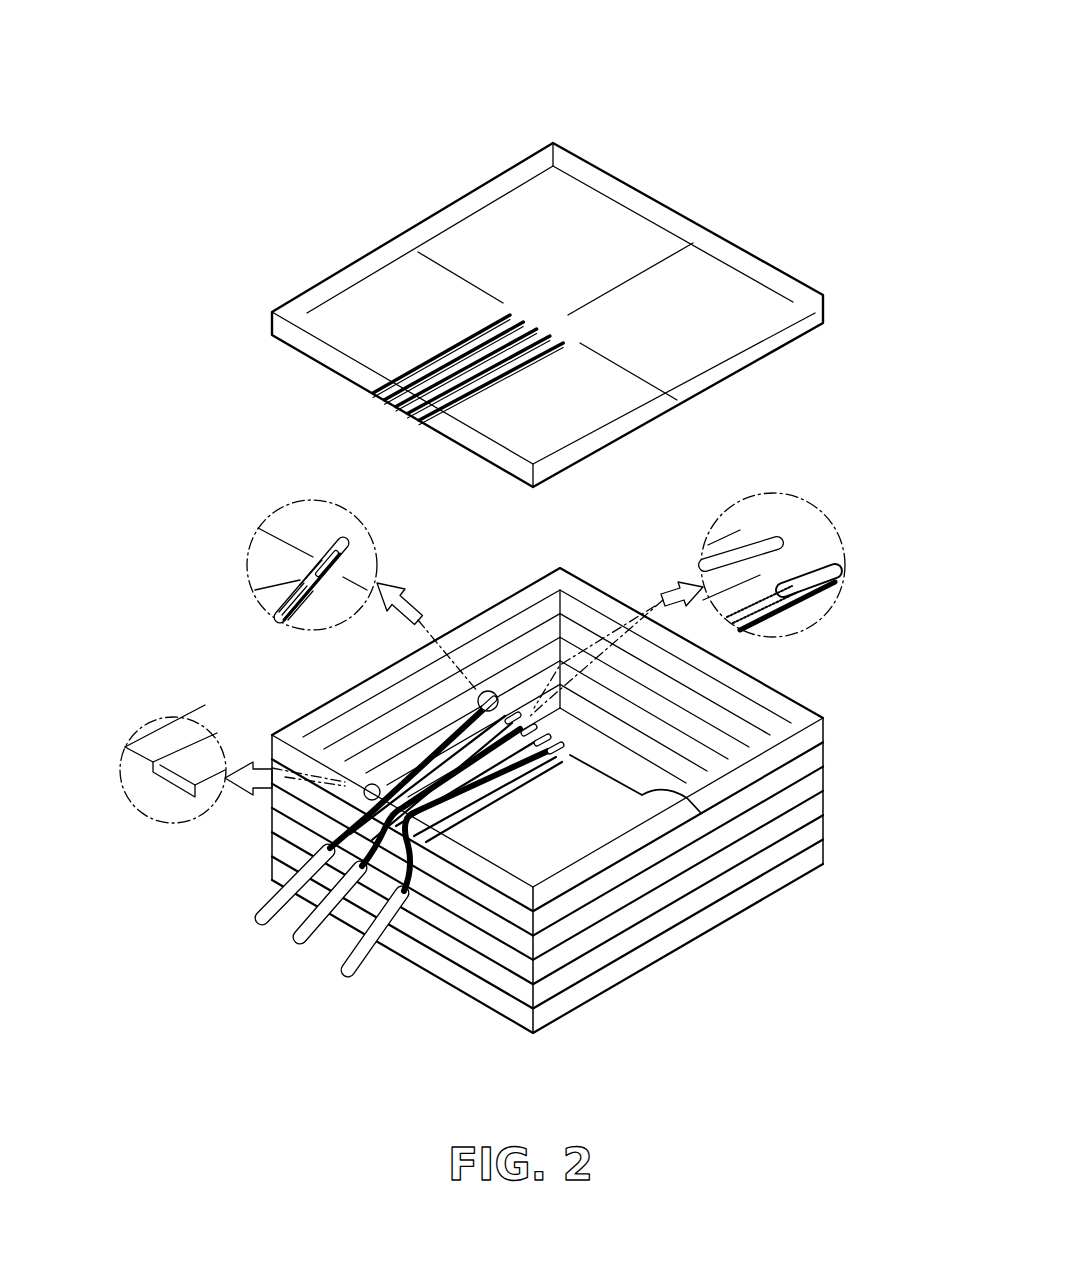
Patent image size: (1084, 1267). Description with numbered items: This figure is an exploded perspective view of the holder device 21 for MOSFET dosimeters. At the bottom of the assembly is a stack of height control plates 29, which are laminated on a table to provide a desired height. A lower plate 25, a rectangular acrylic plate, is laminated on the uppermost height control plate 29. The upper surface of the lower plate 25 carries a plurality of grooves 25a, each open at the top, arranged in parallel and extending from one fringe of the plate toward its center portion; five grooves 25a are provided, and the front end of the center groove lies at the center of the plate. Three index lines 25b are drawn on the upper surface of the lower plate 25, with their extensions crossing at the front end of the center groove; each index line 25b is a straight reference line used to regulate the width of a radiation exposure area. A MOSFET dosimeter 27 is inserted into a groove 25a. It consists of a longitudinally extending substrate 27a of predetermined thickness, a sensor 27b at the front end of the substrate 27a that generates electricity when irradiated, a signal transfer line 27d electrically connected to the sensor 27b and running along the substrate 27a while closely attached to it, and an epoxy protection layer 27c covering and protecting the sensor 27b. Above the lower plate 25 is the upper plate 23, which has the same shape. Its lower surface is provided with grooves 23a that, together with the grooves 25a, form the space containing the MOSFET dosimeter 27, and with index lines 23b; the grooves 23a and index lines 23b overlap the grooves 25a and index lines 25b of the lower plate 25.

The holder device 21 is at (741, 107).
The upper plate 23 is at (826, 300).
The grooves 23a is at (442, 344).
The index lines 23b is at (640, 275).
The lower plate 25 is at (790, 691).
The grooves 25a is at (183, 773).
The index lines 25b is at (689, 799).
The MOSFET dosimeter 27 is at (284, 571).
The substrate 27a is at (300, 620).
The sensor 27b is at (309, 550).
The epoxy protection layer 27c is at (344, 541).
The signal transfer line 27d is at (272, 609).
The height control plates 29 is at (830, 745).